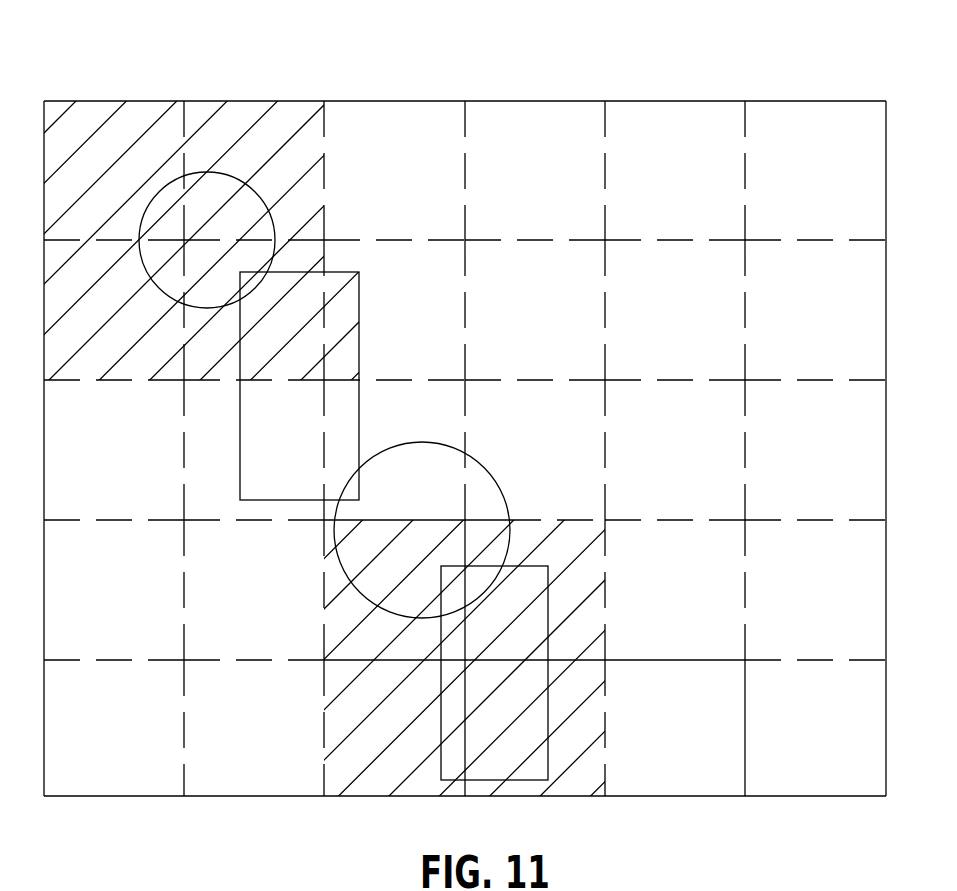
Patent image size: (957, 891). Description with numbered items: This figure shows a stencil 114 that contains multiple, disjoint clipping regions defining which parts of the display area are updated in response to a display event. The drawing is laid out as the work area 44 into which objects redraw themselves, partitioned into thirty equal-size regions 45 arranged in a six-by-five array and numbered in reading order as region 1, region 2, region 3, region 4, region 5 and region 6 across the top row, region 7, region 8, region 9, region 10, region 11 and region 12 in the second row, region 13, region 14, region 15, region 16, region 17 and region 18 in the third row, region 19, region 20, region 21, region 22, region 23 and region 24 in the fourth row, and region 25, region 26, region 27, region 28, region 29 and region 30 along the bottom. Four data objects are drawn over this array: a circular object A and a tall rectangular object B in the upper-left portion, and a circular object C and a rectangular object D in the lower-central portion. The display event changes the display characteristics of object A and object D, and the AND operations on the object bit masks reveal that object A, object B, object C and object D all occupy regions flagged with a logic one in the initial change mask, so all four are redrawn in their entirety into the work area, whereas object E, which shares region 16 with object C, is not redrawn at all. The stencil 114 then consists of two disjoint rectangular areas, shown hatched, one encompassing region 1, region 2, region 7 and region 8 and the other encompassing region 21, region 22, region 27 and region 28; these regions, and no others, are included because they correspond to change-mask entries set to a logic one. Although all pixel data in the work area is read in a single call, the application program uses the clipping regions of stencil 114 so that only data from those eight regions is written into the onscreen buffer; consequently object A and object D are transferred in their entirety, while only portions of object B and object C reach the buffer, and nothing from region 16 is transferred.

The display screen 44 is at (446, 50).
The region 45 is at (370, 117).
The stencil 114 is at (285, 785).
The object A is at (250, 176).
The object B is at (359, 326).
The object C is at (503, 490).
The object D is at (548, 604).
The region 1 is at (114, 170).
The region 2 is at (254, 170).
The region 3 is at (394, 170).
The region 4 is at (535, 170).
The region 5 is at (675, 170).
The region 6 is at (815, 170).
The region 7 is at (114, 310).
The region 8 is at (254, 310).
The region 9 is at (394, 310).
The region 10 is at (535, 310).
The region 11 is at (675, 310).
The region 12 is at (815, 310).
The region 13 is at (114, 450).
The region 14 is at (254, 450).
The region 15 is at (394, 450).
The region 16 is at (535, 450).
The region 17 is at (675, 450).
The region 18 is at (815, 450).
The region 19 is at (114, 590).
The region 20 is at (254, 590).
The region 21 is at (394, 590).
The region 22 is at (535, 590).
The region 23 is at (675, 590).
The region 24 is at (815, 590).
The region 25 is at (114, 728).
The region 26 is at (254, 728).
The region 27 is at (394, 728).
The region 28 is at (535, 728).
The region 29 is at (675, 728).
The region 30 is at (815, 728).